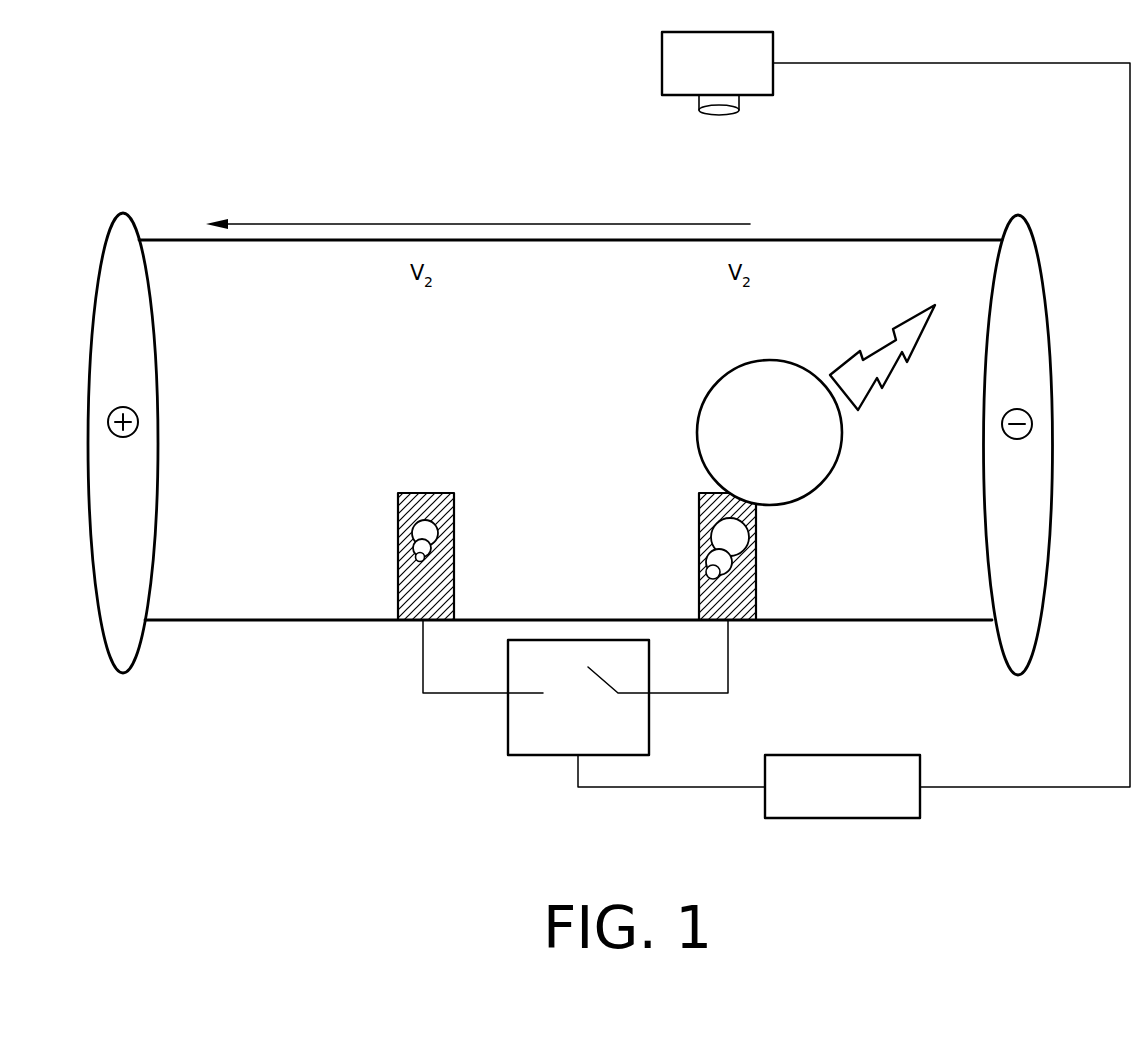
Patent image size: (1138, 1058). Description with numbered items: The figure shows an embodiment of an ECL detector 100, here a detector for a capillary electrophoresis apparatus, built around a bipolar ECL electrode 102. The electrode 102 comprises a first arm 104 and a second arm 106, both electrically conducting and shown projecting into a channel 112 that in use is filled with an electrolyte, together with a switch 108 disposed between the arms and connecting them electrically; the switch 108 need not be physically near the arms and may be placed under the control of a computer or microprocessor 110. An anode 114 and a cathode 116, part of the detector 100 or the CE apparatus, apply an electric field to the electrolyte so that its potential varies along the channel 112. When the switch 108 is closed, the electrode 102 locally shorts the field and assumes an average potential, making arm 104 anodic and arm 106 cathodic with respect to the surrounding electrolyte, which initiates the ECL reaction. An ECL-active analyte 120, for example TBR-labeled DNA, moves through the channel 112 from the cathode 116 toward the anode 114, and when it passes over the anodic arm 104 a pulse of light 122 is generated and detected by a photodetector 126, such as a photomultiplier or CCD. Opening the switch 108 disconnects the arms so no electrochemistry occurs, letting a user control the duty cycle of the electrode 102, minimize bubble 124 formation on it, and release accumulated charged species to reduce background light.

The ECL detector 100 is at (355, 145).
The bipolar ECL electrode 102 is at (455, 720).
The first arm 104 is at (757, 587).
The second arm 106 is at (398, 588).
The switch 108 is at (600, 743).
The microprocessor 110 is at (870, 808).
The channel 112 is at (795, 240).
The anode 114 is at (143, 505).
The cathode 116 is at (1038, 505).
The ECL-active analyte 120 is at (792, 450).
The light 122 is at (917, 315).
The bubble 124 is at (418, 535).
The photodetector 126 is at (738, 75).